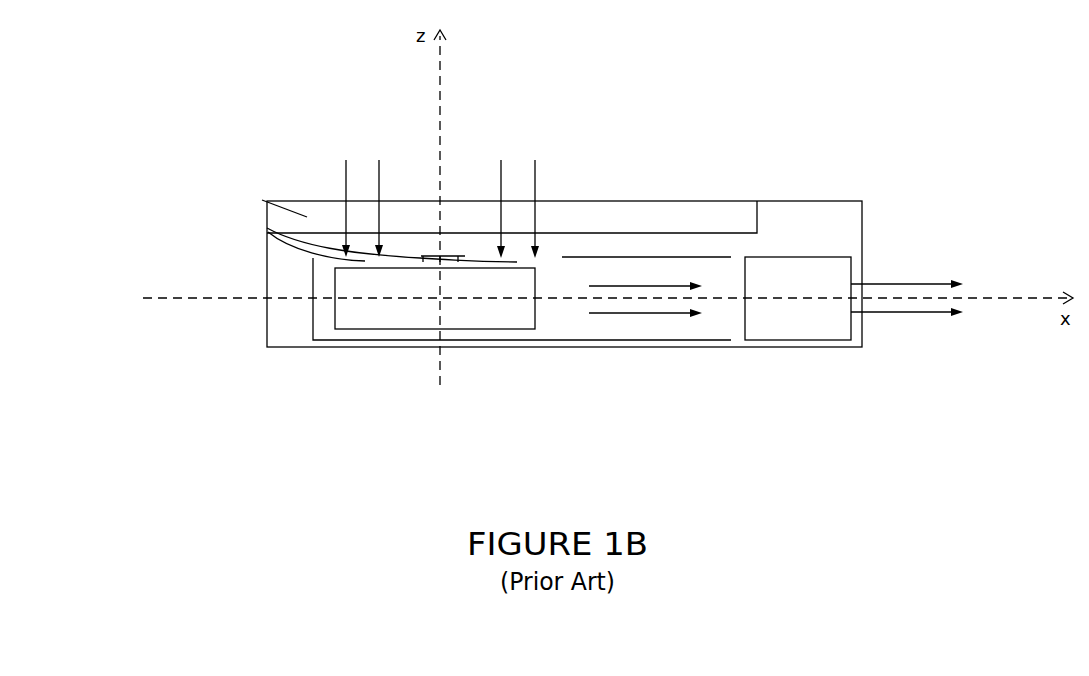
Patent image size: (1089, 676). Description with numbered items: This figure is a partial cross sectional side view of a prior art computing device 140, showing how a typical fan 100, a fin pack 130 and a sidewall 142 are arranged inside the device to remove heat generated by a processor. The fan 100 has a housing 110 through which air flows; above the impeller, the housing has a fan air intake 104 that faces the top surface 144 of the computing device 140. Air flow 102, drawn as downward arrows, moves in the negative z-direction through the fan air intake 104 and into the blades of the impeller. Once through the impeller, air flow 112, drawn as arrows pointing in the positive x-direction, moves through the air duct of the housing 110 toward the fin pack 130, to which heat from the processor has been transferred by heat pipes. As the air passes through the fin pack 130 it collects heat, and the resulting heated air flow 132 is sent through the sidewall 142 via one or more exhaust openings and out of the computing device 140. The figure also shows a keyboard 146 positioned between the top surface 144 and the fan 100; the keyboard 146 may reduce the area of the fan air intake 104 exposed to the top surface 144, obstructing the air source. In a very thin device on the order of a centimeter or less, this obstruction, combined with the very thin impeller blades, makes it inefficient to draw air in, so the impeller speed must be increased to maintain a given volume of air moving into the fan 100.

The fan 100 is at (335, 317).
The air flow 102 is at (323, 167).
The fan air intake 104 is at (267, 230).
The housing 110 is at (312, 285).
The air flow 112 is at (653, 286).
The fin pack 130 is at (852, 263).
The heated air flow 132 is at (912, 284).
The computing device 140 is at (809, 165).
The sidewall 142 is at (863, 223).
The top surface 144 is at (605, 201).
The keyboard 146 is at (262, 200).